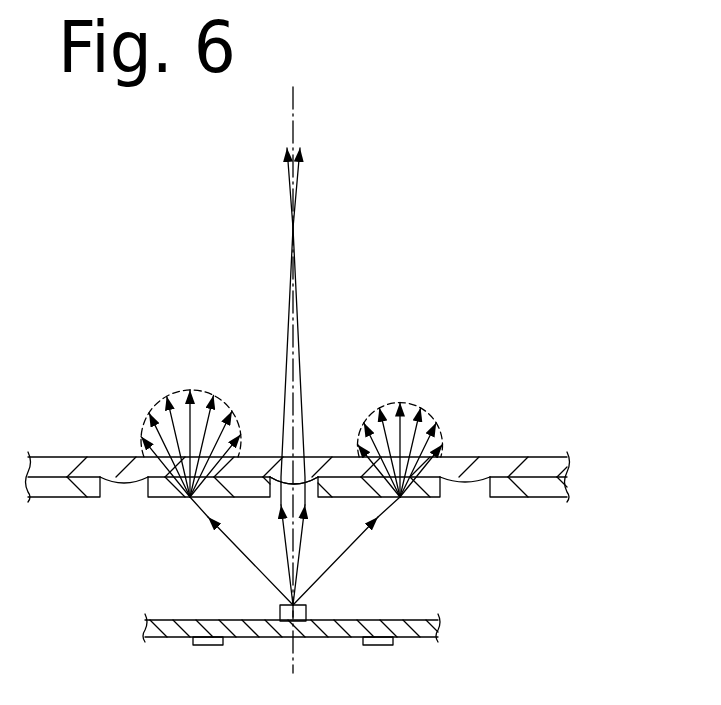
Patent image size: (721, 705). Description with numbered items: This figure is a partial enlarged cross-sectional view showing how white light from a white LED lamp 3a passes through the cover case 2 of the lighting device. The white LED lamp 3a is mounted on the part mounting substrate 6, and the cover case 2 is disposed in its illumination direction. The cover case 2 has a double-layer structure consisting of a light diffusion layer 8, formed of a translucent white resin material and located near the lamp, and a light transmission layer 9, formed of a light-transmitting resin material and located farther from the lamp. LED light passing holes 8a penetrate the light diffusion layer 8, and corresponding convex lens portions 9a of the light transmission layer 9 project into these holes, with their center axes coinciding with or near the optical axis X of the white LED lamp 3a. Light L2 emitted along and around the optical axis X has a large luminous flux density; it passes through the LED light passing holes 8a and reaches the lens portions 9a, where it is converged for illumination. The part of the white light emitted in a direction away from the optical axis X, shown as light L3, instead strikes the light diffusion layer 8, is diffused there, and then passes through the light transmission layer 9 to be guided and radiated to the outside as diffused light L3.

The cover case 2 is at (330, 464).
The light transmission layer 9 is at (527, 460).
The lens portions 9a is at (302, 472).
The light diffusion layer 8 is at (428, 498).
The LED light passing holes 8a is at (308, 492).
The white LED lamp 3a is at (306, 612).
The part mounting substrate 6 is at (418, 632).
The light L2 is at (287, 171).
The diffused light L3 is at (182, 390).
The optical axis X is at (293, 365).